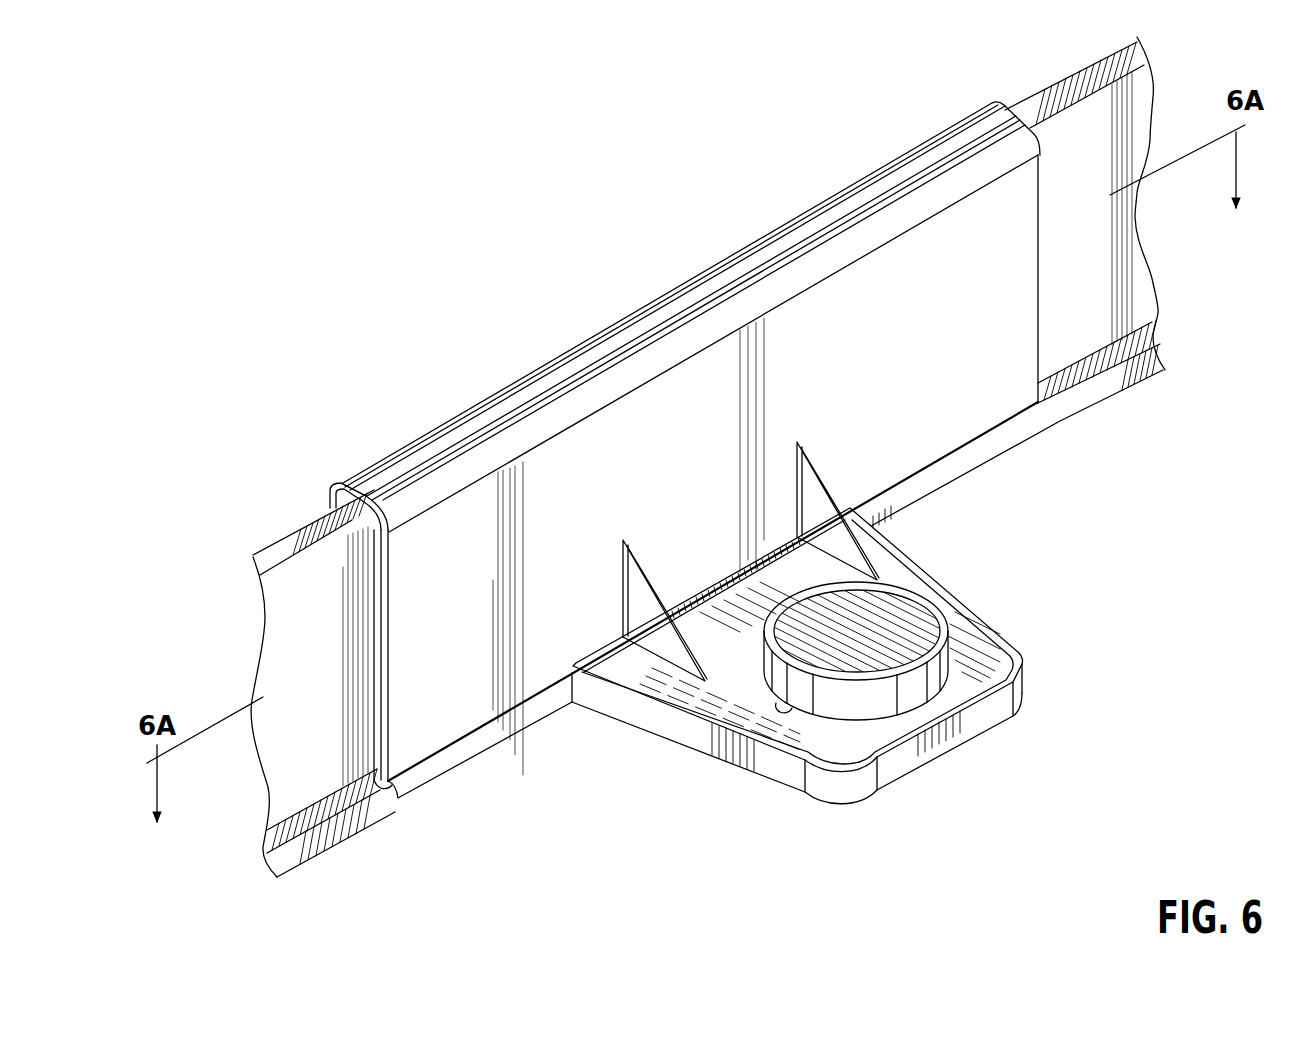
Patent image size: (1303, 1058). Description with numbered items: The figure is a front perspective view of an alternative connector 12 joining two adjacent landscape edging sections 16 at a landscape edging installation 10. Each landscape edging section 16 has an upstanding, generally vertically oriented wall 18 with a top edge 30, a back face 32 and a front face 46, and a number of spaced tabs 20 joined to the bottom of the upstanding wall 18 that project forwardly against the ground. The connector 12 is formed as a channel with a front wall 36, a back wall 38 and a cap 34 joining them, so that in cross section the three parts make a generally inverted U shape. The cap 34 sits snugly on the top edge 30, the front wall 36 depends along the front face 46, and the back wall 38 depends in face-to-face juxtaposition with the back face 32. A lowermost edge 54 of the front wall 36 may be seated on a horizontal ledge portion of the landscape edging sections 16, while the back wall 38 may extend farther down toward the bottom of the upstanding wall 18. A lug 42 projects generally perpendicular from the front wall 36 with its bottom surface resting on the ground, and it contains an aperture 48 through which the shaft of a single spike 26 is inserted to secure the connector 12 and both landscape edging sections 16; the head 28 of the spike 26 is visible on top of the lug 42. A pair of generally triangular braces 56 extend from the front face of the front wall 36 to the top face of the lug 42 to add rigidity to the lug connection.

The landscape edging installation 10 is at (443, 206).
The connector 12 is at (572, 342).
The landscape edging section 16 is at (255, 543).
The upstanding wall 18 is at (284, 692).
The tab 20 is at (906, 551).
The spike 26 is at (912, 587).
The head 28 is at (920, 622).
The top edge 30 is at (300, 530).
The back face 32 is at (287, 537).
The cap 34 is at (780, 248).
The front wall 36 is at (660, 477).
The back wall 38 is at (338, 487).
The lug 42 is at (962, 682).
The front face 46 is at (291, 778).
The aperture 48 is at (775, 702).
The lowermost edge 54 is at (381, 791).
The brace 56 is at (637, 605).